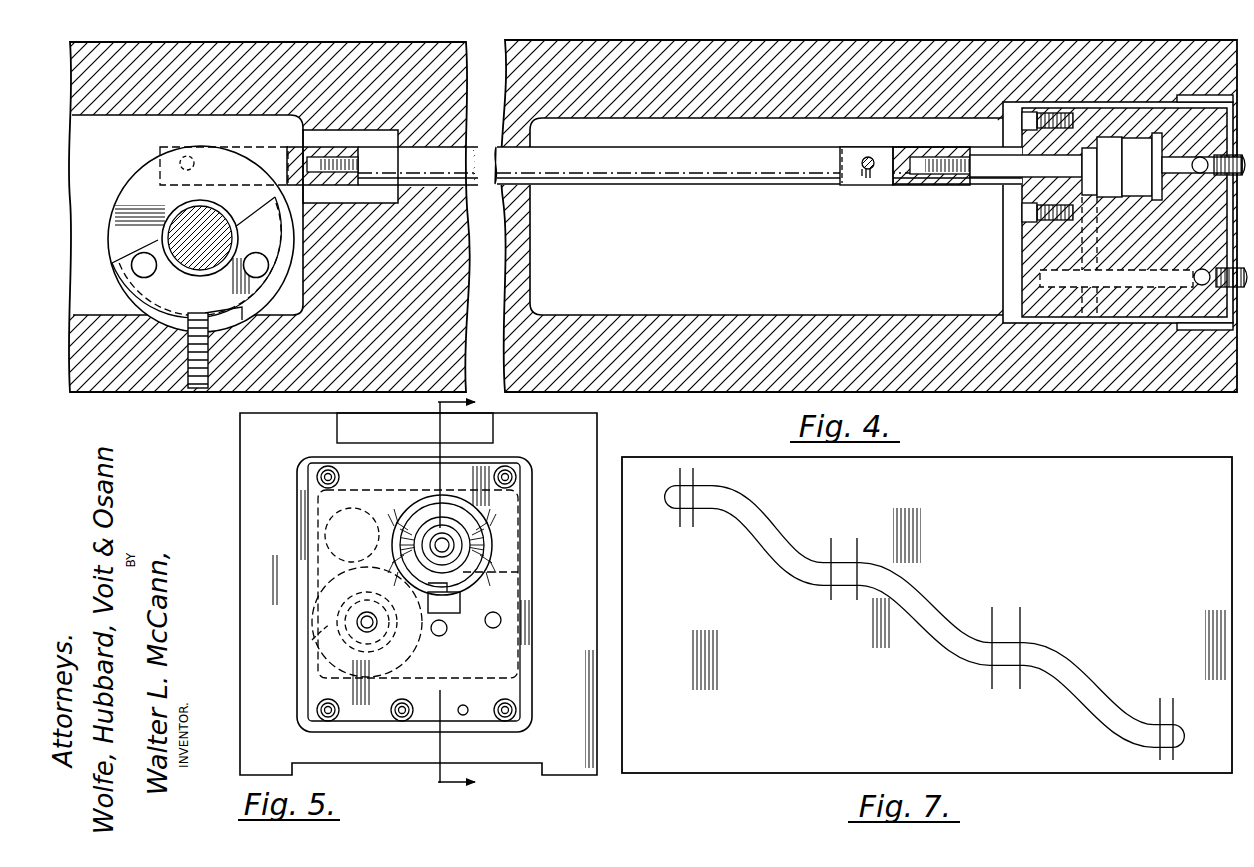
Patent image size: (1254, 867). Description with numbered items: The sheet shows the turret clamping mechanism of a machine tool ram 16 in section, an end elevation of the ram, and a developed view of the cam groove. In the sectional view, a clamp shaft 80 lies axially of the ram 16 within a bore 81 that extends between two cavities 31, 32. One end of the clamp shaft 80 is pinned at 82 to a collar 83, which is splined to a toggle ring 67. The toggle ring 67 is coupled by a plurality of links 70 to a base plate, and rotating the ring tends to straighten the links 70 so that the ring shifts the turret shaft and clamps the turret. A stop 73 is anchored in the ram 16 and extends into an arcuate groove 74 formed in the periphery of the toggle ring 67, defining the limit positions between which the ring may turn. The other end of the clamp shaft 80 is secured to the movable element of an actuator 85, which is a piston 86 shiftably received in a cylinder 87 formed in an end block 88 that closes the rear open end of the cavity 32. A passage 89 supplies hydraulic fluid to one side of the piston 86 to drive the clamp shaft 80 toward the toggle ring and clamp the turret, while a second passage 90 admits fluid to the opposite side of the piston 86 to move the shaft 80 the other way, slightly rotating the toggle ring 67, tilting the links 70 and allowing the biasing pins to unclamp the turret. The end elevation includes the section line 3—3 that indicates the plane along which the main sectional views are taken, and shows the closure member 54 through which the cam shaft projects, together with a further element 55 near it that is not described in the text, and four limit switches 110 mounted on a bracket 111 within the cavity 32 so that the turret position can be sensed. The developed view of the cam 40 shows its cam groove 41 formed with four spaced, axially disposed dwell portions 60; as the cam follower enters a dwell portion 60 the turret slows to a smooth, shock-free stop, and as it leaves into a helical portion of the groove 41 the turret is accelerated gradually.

In FIG. 5, the line 3- 3 is at (445, 594).
In FIG. 4, the ram 16 is at (957, 383).
In FIG. 5, the ram 16 is at (580, 438).
In FIG. 4, the cavity 31 is at (113, 120).
In FIG. 4, the cavity 32 is at (843, 315).
In FIG. 5, the cavity 32 is at (517, 642).
In FIG. 7, the cam 40 is at (1123, 473).
In FIG. 7, the cam groove 41 is at (927, 604).
In FIG. 5, the closure member 54 is at (477, 532).
In FIG. 5, the pin 55 is at (440, 636).
In FIG. 7, the dwell portions 60 is at (682, 510).
In FIG. 4, the toggle ring 67 is at (142, 290).
In FIG. 4, the links 70 is at (140, 263).
In FIG. 4, the stop 73 is at (192, 365).
In FIG. 4, the arcuate groove 74 is at (222, 317).
In FIG. 4, the clamp shaft 80 is at (677, 173).
In FIG. 4, the bore 81 is at (453, 188).
In FIG. 4, the pin 82 is at (182, 157).
In FIG. 4, the collar 83 is at (237, 170).
In FIG. 4, the actuator 85 is at (1073, 180).
In FIG. 5, the actuator 85 is at (329, 622).
In FIG. 4, the piston 86 is at (1100, 164).
In FIG. 4, the cylinder 87 is at (1113, 177).
In FIG. 4, the end block 88 is at (1033, 303).
In FIG. 5, the end block 88 is at (507, 555).
In FIG. 4, the passage 89 is at (1173, 163).
In FIG. 5, the passage 89 is at (367, 622).
In FIG. 4, the second passage 90 is at (1202, 287).
In FIG. 5, the second passage 90 is at (496, 623).
In FIG. 5, the limit switches 110 is at (367, 622).
In FIG. 5, the bracket 111 is at (455, 607).